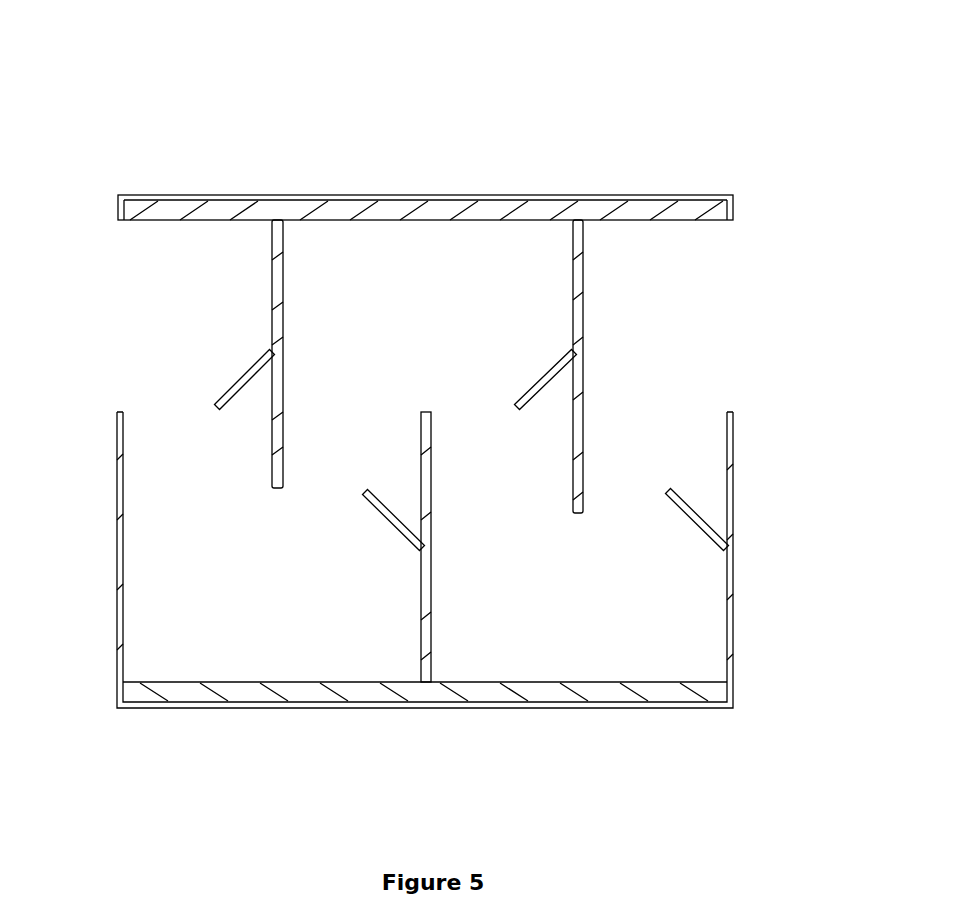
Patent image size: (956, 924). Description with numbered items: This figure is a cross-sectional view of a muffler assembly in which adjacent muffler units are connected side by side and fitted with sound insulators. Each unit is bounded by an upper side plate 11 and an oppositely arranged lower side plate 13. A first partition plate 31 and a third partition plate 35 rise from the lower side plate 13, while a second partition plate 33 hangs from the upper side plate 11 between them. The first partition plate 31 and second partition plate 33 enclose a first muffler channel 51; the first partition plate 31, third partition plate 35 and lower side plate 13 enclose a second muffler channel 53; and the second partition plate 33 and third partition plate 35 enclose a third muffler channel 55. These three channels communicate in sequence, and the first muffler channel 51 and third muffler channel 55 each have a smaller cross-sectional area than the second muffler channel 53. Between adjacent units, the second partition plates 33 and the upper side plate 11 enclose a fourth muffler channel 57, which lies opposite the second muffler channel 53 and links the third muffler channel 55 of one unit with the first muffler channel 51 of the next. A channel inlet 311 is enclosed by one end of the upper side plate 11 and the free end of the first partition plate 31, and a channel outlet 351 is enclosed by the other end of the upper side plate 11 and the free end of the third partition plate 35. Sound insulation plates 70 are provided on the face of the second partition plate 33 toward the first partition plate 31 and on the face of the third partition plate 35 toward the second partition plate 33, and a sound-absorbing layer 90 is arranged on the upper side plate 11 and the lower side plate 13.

The upper side plate 11 is at (447, 195).
The lower side plate 13 is at (462, 708).
The first partition plate 31 is at (117, 553).
The second partition plate 33 is at (277, 290).
The third partition plate 35 is at (733, 608).
The first muffler channel 51 is at (173, 441).
The second muffler channel 53 is at (293, 565).
The third muffler channel 55 is at (338, 462).
The fourth muffler channel 57 is at (447, 322).
The sound insulation plate 70 is at (551, 372).
The sound-absorbing layer 90 is at (395, 215).
The channel inlet 311 is at (127, 290).
The channel outlet 351 is at (725, 327).